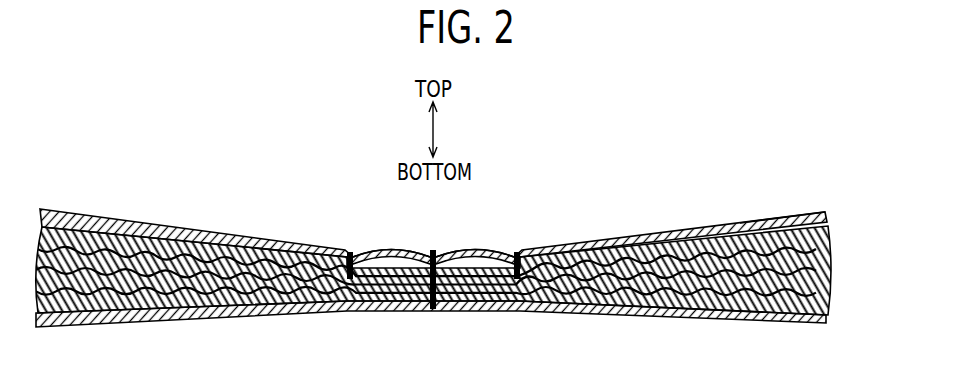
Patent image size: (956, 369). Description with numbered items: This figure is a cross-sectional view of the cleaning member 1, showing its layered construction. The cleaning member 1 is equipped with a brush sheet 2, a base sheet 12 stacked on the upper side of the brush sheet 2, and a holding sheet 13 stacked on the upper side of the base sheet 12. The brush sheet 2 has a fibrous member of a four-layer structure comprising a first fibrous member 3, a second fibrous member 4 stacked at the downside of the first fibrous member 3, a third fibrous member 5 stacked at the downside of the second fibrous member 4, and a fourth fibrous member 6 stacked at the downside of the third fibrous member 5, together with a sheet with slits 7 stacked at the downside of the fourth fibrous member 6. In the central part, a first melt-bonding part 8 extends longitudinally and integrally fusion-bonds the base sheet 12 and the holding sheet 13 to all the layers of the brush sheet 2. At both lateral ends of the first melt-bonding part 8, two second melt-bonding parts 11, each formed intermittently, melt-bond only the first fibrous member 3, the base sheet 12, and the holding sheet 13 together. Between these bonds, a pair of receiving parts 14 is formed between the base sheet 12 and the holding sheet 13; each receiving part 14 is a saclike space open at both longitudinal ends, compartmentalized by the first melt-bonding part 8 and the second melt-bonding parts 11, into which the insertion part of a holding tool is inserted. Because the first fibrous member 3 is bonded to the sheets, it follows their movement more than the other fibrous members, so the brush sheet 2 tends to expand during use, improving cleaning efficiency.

The cleaning member 1 is at (652, 174).
The brush sheet 2 is at (468, 282).
The first fibrous member 3 is at (832, 230).
The second fibrous member 4 is at (832, 256).
The third fibrous member 5 is at (832, 281).
The fourth fibrous member 6 is at (832, 308).
The sheet with slits 7 is at (449, 326).
The first melt-bonding part 8 is at (433, 251).
The second melt-bonding parts 11 is at (349, 253).
The base sheet 12 is at (830, 222).
The holding sheet 13 is at (803, 212).
The receiving part 14 is at (387, 262).